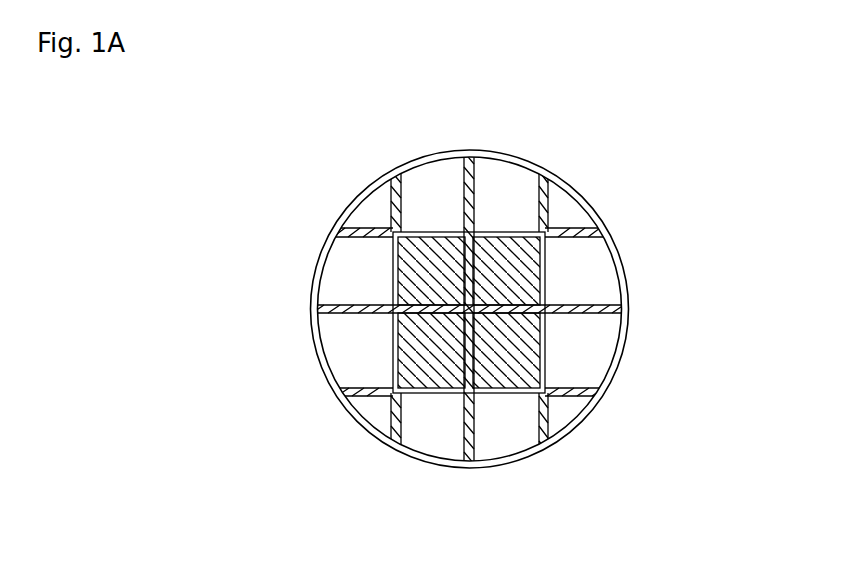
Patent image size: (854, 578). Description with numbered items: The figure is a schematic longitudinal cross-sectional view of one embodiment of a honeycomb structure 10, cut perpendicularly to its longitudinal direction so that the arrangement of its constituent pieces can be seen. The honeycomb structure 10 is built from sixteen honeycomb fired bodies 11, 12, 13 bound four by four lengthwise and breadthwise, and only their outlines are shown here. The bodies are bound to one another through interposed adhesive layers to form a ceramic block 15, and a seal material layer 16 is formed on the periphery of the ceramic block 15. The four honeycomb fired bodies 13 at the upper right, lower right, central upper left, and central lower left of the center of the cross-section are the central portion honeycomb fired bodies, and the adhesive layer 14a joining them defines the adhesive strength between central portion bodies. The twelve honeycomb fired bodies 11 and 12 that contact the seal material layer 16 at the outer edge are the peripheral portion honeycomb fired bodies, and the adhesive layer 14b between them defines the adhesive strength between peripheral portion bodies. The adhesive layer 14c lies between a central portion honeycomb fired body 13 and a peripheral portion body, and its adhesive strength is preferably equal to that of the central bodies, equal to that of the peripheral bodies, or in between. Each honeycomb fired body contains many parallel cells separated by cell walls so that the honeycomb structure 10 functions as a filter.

The honeycomb structure 10 is at (332, 194).
The honeycomb fired body 11 is at (563, 412).
The honeycomb fired body 12 is at (495, 422).
The honeycomb fired body 13 is at (428, 363).
The adhesive layer 14a is at (510, 308).
The adhesive layer 14b is at (380, 312).
The adhesive layer 14c is at (543, 268).
The ceramic block 15 is at (638, 330).
The seal material layer 16 is at (621, 362).